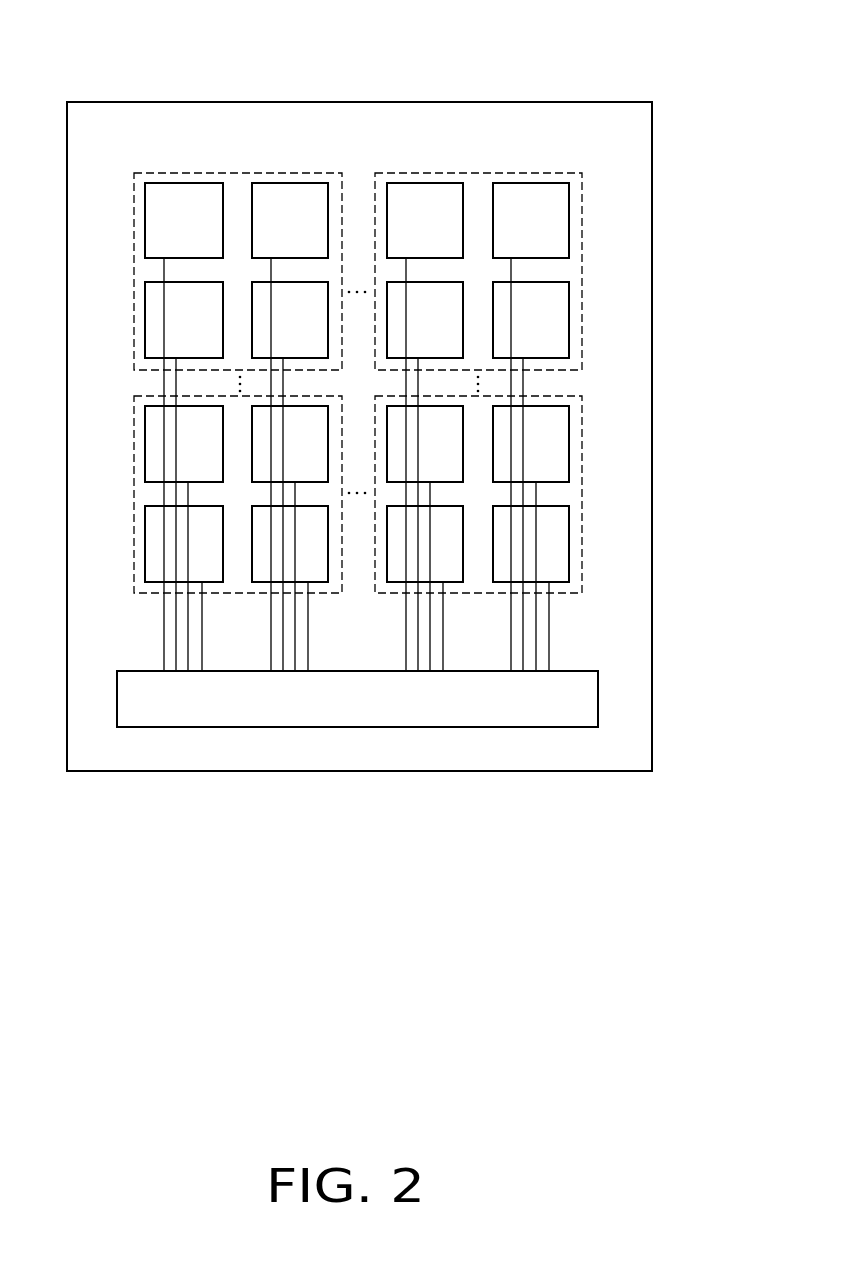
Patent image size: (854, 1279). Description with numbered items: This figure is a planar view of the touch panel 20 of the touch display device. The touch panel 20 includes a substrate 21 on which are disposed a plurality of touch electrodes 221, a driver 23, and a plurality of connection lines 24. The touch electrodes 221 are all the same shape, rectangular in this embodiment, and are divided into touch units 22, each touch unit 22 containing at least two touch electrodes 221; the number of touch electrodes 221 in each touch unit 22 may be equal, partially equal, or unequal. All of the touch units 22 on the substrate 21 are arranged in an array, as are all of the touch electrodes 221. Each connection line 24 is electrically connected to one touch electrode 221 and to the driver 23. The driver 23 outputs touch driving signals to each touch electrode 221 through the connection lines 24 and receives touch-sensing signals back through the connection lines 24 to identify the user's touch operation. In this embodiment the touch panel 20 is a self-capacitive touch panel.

The touch panel 20 is at (381, 60).
The substrate 21 is at (640, 133).
The touch unit 22 is at (582, 277).
The touch electrode 221 is at (568, 330).
The driver 23 is at (598, 697).
The connection line 24 is at (550, 643).